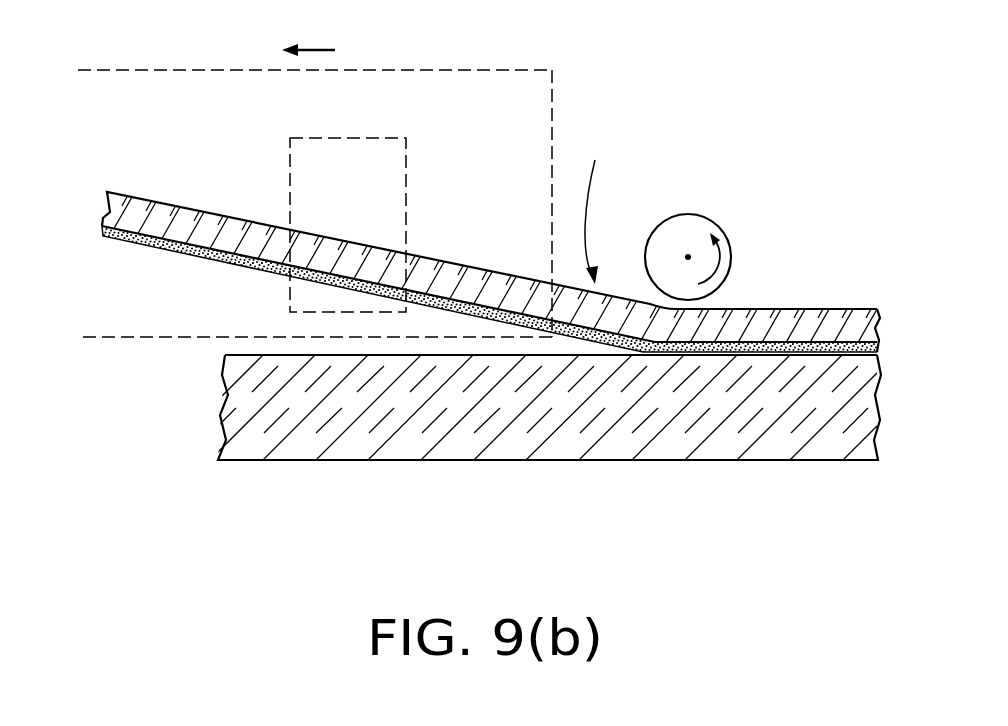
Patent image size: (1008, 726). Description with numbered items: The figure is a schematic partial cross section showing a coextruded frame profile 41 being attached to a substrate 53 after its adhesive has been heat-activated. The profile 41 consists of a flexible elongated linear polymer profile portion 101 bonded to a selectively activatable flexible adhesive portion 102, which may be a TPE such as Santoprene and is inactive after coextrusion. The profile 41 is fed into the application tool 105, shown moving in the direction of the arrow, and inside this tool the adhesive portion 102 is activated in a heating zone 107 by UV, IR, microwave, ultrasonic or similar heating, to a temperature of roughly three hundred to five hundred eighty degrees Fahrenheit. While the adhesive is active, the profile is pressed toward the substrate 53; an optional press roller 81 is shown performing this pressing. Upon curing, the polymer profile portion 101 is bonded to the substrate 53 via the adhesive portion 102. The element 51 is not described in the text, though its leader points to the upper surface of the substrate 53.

The profile 41 is at (597, 207).
The substrate surface 51 is at (285, 357).
The substrate 53 is at (695, 447).
The press roller 81 is at (682, 226).
The polymer profile portion 101 is at (103, 212).
The adhesive portion 102 is at (148, 243).
The application tool 105 is at (532, 93).
The heating zone 107 is at (407, 160).